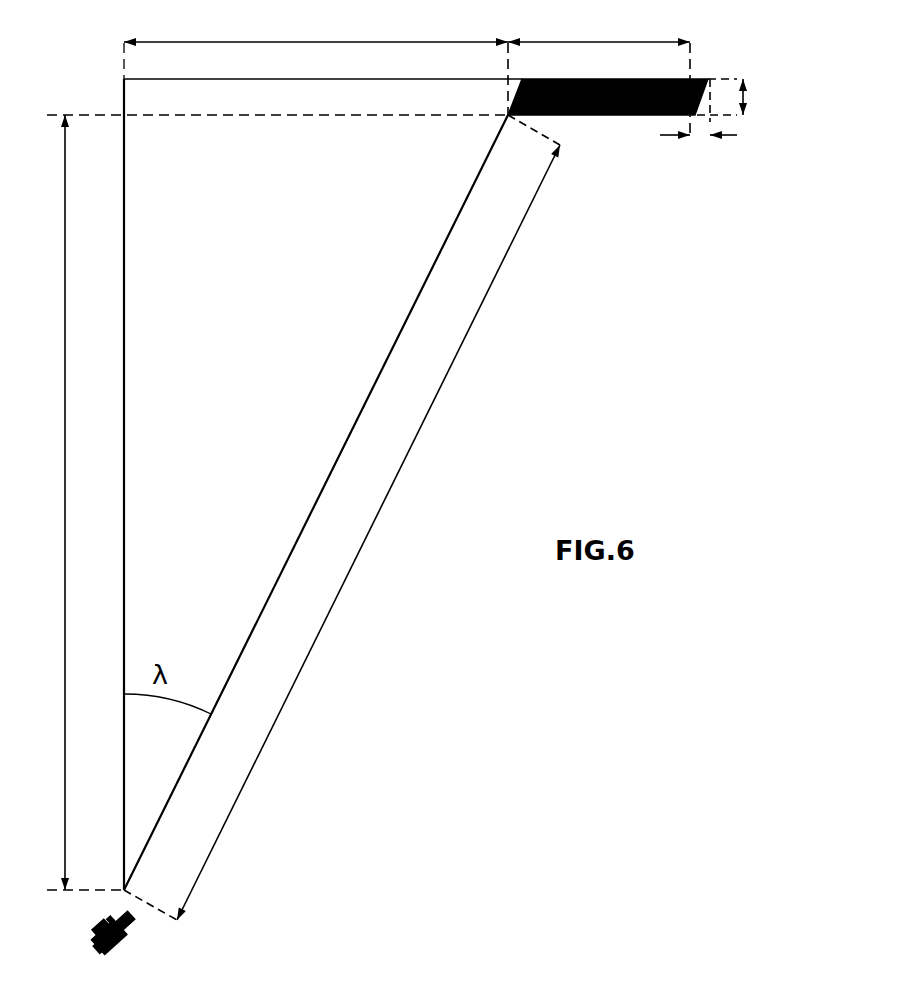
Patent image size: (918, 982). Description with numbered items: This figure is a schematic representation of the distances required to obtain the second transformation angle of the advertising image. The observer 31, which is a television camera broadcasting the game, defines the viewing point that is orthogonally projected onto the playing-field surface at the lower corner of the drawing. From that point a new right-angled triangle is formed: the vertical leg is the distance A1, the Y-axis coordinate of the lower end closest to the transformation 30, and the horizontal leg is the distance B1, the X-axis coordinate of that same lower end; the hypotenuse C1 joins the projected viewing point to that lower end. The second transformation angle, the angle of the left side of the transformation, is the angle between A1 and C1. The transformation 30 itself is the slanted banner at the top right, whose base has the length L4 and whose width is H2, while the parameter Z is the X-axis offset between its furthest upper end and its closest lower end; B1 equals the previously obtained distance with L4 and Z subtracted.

The transformation of the image 30 is at (617, 128).
The observer 31 is at (137, 950).
The distance A1 is at (40, 502).
The distance B1 is at (316, 26).
The hypotenuse distance C1 is at (368, 532).
The length of the base of the transformation L4 is at (599, 32).
The width of the transformed image H2 is at (770, 97).
The parameter Z is at (698, 148).